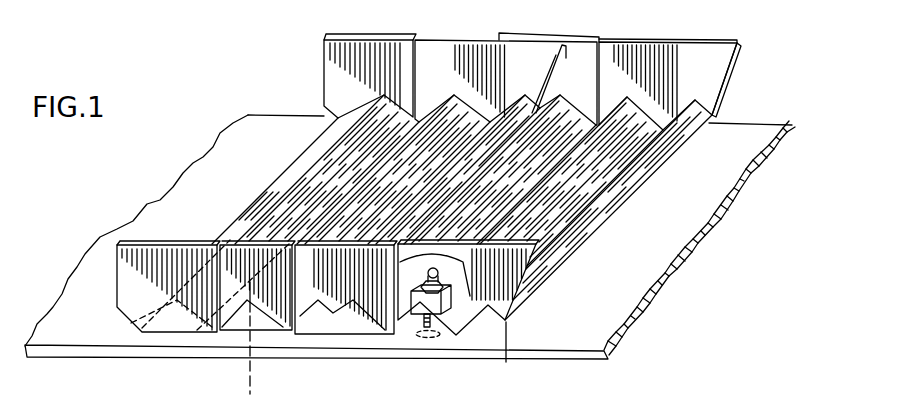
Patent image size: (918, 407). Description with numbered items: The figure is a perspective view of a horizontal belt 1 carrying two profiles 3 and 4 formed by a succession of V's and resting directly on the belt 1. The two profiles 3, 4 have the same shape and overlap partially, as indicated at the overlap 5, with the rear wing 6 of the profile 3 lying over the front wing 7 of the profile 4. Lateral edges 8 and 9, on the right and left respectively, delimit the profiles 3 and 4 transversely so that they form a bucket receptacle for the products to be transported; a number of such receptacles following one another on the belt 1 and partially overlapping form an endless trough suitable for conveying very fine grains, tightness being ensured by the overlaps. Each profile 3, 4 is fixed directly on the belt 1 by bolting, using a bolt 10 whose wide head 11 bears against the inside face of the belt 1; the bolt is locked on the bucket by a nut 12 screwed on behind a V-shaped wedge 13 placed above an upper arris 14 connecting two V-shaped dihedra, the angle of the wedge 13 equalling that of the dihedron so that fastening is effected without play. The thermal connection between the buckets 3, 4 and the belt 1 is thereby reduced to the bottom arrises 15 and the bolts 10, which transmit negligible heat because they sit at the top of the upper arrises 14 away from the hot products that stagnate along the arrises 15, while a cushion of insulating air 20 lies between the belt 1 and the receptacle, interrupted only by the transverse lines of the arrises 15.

The belt 1 is at (716, 181).
The profile 3 is at (389, 32).
The profile 4 is at (737, 55).
The overlap 5 is at (318, 318).
The rear wing 6 is at (506, 126).
The front wing 7 is at (240, 216).
The lateral edge 8 is at (710, 78).
The lateral edge 9 is at (312, 300).
The bolt 10 is at (245, 378).
The wide head 11 is at (440, 338).
The nut 12 is at (443, 272).
The V-shaped wedge 13 is at (455, 297).
The upper arris 14 is at (352, 192).
The bottom arris 15 is at (460, 336).
The cushion of air 20 is at (506, 362).